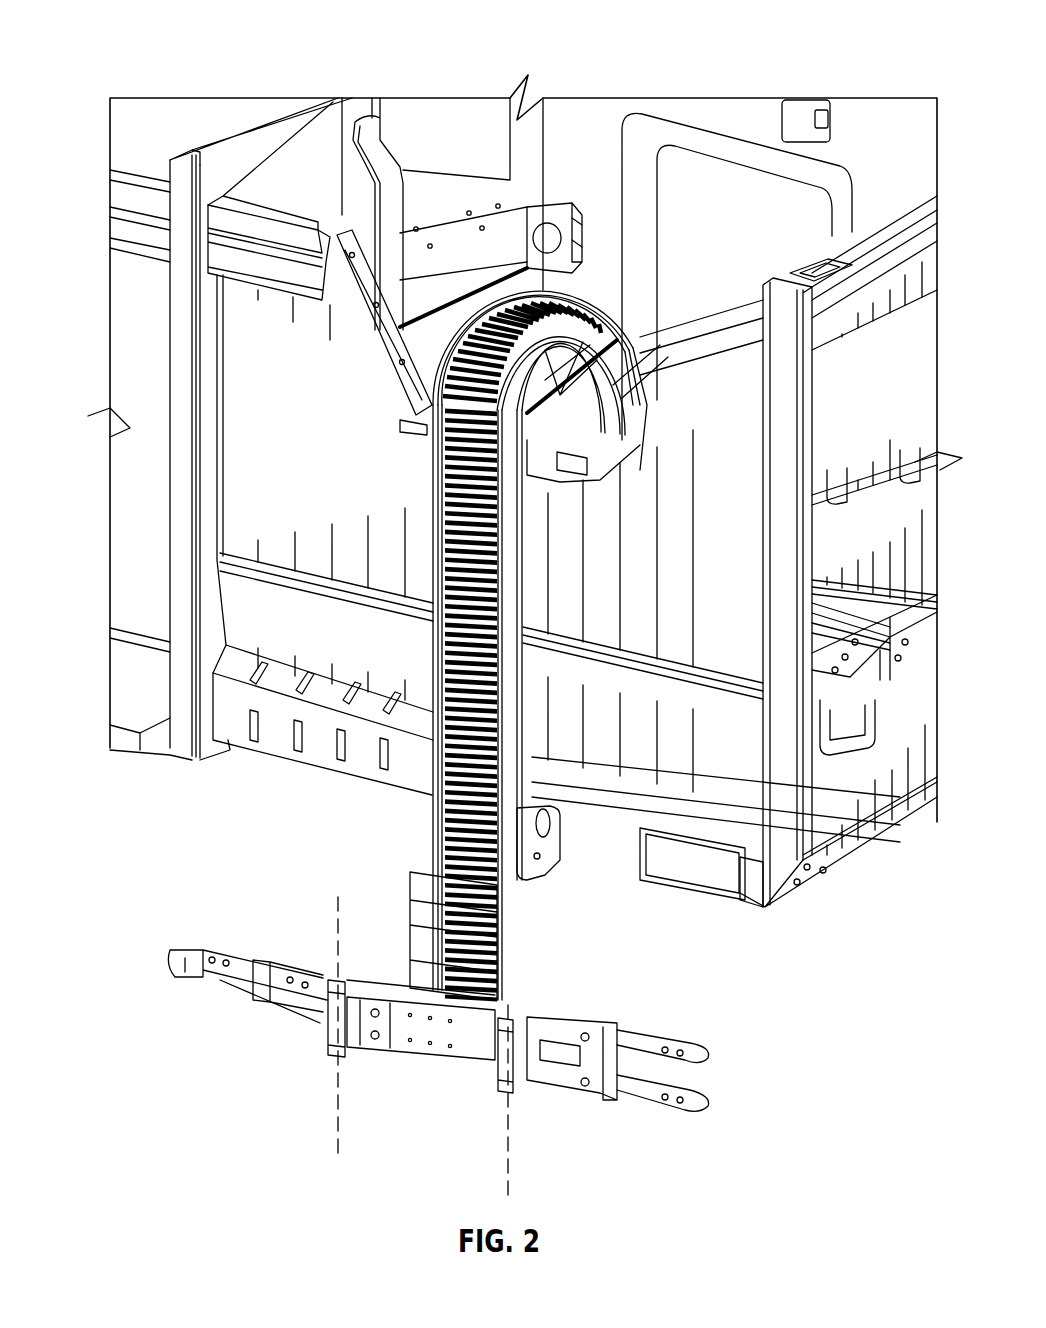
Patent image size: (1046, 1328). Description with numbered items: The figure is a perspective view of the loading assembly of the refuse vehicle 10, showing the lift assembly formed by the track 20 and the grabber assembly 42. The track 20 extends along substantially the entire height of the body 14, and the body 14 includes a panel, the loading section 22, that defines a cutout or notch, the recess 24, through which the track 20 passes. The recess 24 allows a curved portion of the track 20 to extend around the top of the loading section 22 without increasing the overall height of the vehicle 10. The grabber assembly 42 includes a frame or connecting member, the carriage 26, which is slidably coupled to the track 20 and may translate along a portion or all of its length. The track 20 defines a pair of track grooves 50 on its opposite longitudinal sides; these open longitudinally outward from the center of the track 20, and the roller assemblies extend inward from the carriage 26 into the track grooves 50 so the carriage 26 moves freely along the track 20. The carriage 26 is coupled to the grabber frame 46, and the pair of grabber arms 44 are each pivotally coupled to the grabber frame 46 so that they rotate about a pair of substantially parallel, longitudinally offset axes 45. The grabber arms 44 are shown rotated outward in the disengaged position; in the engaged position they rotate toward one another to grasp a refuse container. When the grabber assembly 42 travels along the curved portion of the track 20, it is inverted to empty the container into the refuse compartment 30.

The refuse vehicle 10 is at (114, 34).
The body 14 is at (232, 200).
The track 20 is at (434, 505).
The loading section 22 is at (232, 335).
The recess 24 is at (423, 372).
The carriage 26 is at (430, 868).
The refuse compartment 30 is at (644, 190).
The grabber assembly 42 is at (399, 1018).
The grabber arms 44 is at (288, 961).
The axes 45 is at (336, 898).
The grabber frame 46 is at (438, 1053).
The track grooves 50 is at (583, 301).